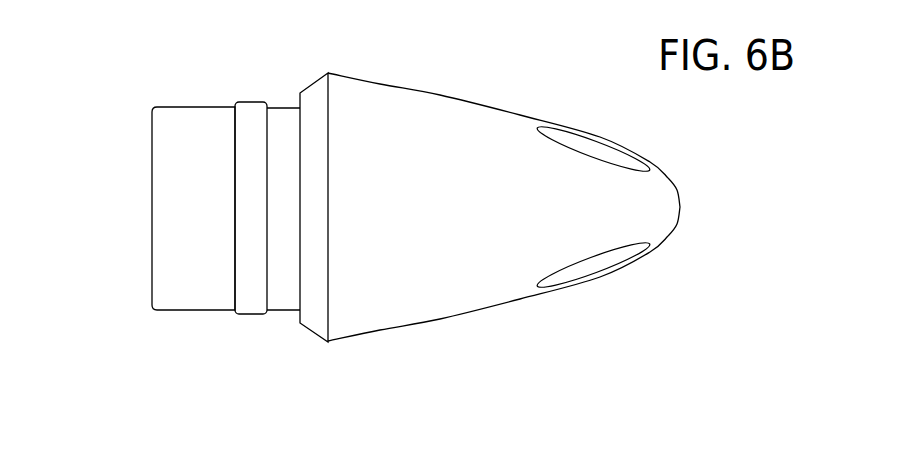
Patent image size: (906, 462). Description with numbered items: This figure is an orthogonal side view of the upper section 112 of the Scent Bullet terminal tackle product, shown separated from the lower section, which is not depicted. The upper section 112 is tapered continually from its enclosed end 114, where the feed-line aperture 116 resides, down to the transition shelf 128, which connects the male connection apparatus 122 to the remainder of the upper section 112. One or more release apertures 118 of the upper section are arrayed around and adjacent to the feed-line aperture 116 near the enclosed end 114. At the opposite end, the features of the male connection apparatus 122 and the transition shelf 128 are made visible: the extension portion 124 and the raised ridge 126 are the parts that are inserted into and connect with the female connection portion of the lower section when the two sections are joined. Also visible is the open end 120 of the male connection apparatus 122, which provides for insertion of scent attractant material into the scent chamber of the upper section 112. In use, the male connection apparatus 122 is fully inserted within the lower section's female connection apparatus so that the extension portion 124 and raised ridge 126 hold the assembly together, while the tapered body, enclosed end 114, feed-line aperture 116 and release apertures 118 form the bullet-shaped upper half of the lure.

The upper section 112 is at (475, 128).
The enclosed end 114 is at (688, 137).
The feed-line aperture 116 is at (692, 203).
The release apertures 118 is at (614, 264).
The open end 120 is at (176, 209).
The male connection apparatus 122 is at (235, 70).
The extension portion 124 is at (197, 298).
The raised ridge 126 is at (248, 308).
The transition shelf 128 is at (317, 312).